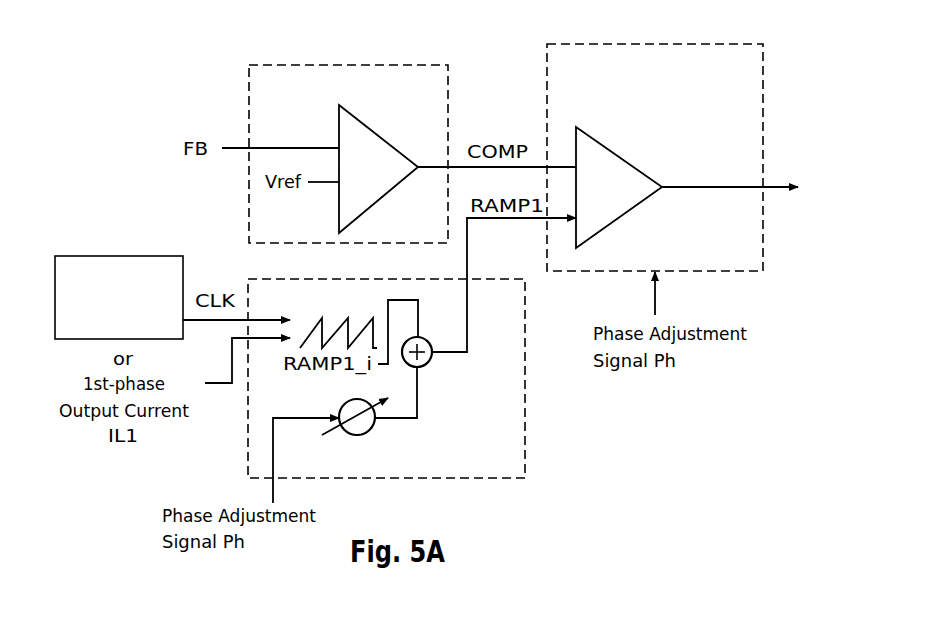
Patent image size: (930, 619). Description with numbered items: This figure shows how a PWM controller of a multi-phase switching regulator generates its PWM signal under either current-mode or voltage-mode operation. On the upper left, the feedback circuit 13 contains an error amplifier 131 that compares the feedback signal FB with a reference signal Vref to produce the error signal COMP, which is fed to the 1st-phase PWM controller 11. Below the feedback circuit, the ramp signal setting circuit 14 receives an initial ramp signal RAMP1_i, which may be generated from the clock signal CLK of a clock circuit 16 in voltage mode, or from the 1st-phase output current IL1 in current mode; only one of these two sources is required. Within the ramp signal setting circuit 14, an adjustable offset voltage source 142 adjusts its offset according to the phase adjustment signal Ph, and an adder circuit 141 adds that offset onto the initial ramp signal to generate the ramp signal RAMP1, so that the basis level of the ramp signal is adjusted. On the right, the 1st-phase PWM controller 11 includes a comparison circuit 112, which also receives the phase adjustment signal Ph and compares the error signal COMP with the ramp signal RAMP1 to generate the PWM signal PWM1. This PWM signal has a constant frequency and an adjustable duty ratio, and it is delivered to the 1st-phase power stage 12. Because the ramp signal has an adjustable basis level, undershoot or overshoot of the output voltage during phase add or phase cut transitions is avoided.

The 1st-phase PWM controller 11 is at (751, 77).
The comparison circuit 112 is at (607, 145).
The 1st-phase power stage 12 is at (747, 175).
The feedback circuit 13 is at (283, 95).
The error amplifier 131 is at (400, 148).
The ramp signal setting circuit 14 is at (507, 460).
The adder circuit 141 is at (433, 340).
The adjustable offset voltage source 142 is at (367, 433).
The clock circuit 16 is at (129, 318).